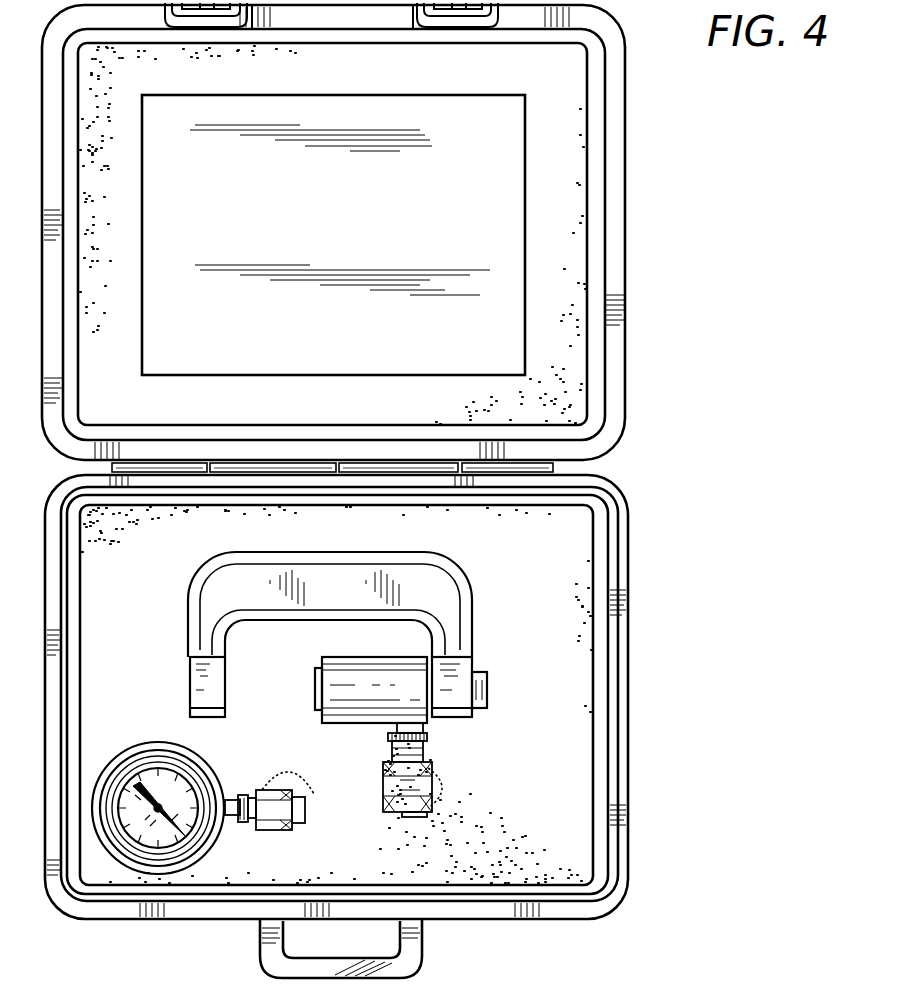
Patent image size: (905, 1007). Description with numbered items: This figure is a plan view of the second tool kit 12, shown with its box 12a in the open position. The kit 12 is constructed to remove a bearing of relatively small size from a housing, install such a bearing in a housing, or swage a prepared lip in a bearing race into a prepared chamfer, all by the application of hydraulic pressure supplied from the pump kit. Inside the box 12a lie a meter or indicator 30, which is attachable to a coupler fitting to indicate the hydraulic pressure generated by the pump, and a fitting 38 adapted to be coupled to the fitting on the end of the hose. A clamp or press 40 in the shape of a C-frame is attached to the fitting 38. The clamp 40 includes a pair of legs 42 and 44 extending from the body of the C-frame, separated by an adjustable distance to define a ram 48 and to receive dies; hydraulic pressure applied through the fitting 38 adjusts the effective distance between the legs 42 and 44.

The kit 12 is at (382, 490).
The box 12a is at (630, 723).
The meter or indicator 30 is at (153, 747).
The fitting 38 is at (400, 797).
The clamp or press 40 is at (329, 621).
The leg 42 is at (197, 681).
The leg 44 is at (466, 648).
The ram 48 is at (317, 683).